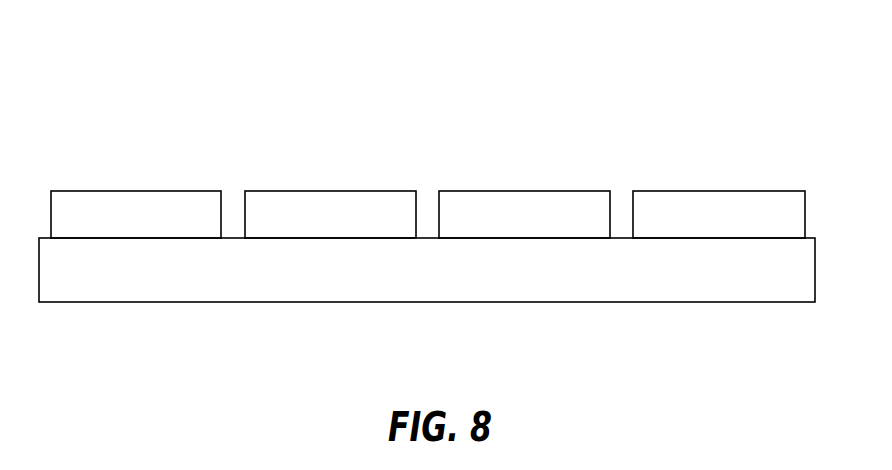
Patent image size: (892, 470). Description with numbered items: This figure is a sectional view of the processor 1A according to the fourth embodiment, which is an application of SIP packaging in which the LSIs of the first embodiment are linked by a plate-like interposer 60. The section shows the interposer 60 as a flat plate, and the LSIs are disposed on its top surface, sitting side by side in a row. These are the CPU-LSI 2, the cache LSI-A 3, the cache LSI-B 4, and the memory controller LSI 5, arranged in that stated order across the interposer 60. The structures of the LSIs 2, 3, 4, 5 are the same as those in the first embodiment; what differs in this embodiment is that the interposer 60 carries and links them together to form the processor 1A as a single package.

The processor 1A is at (393, 127).
The CPU-LSI 2 is at (76, 190).
The cache LSI-A 3 is at (273, 190).
The cache LSI-B 4 is at (471, 190).
The memory controller LSI 5 is at (668, 190).
The interposer 60 is at (166, 302).